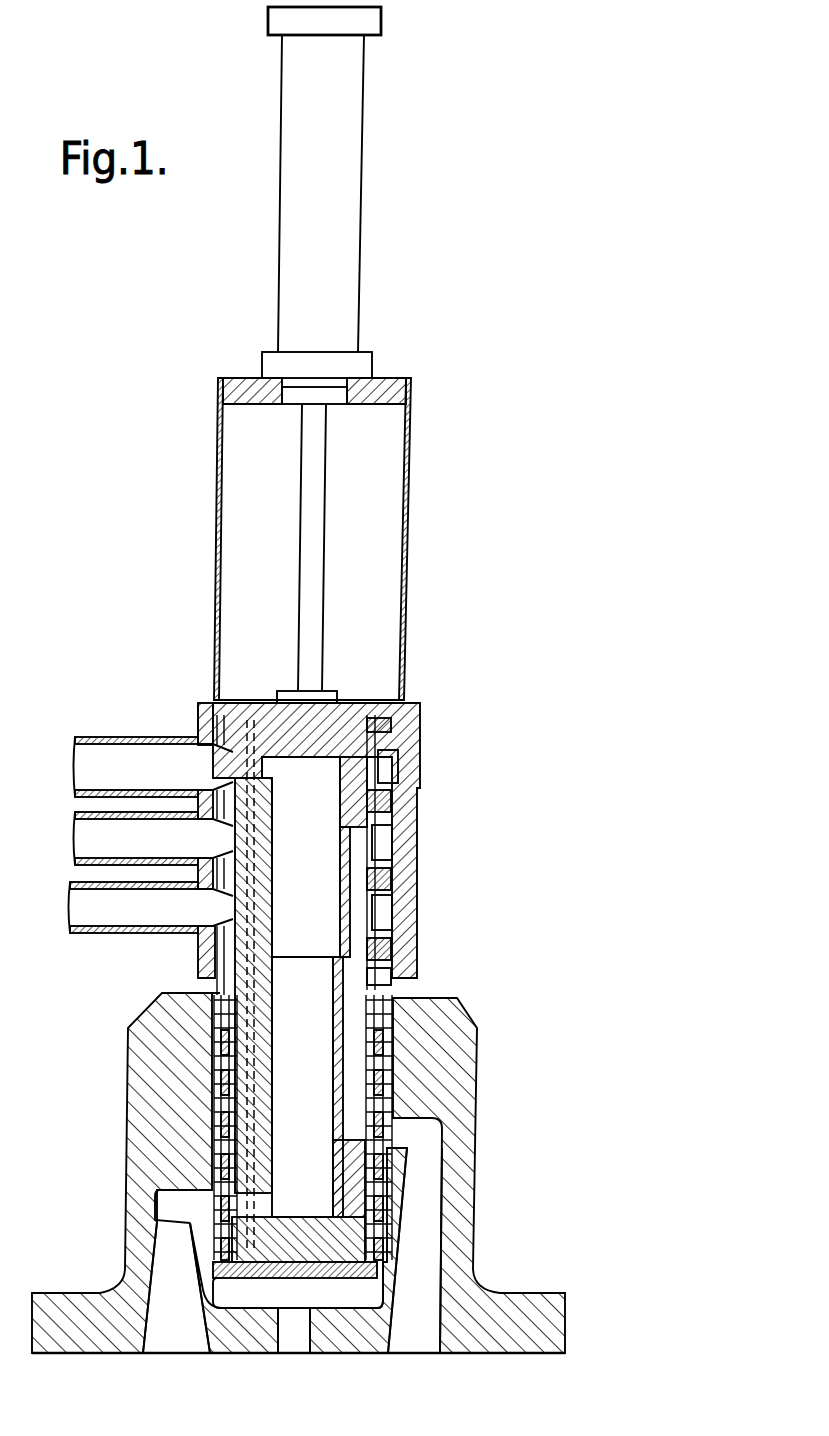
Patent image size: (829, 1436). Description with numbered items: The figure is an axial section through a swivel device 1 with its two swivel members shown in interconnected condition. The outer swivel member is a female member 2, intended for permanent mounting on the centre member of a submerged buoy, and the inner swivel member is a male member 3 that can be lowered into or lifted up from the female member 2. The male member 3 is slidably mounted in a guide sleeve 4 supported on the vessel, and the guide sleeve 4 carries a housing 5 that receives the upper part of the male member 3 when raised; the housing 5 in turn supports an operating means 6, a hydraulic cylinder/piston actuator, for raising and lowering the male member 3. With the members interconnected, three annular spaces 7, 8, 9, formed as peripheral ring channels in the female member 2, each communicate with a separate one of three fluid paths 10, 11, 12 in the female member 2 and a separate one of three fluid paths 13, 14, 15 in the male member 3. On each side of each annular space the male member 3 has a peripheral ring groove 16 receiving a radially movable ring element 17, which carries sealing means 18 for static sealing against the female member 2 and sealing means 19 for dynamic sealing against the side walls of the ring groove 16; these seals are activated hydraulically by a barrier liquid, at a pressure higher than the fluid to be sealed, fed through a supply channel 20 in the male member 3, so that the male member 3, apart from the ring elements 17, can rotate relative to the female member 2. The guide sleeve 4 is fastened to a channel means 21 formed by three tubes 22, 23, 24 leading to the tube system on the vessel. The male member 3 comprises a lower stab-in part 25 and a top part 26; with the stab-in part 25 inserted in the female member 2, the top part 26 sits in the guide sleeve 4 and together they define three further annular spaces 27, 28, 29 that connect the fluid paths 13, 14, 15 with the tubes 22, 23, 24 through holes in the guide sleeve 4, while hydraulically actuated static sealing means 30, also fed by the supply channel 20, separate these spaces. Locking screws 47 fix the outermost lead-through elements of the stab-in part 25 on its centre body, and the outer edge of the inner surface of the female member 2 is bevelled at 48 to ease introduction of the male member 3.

The valve 1 is at (438, 988).
The female member 2 is at (481, 1090).
The male member 3 is at (185, 982).
The guide sleeve 4 is at (405, 946).
The housing 5 is at (410, 558).
The operating means 6 is at (345, 202).
The annular space 7 is at (207, 1202).
The annular space 8 is at (215, 1135).
The annular space 9 is at (210, 1058).
The fluid path 10 is at (175, 1340).
The fluid path 11 is at (302, 1318).
The fluid path 12 is at (415, 1330).
The fluid path 13 is at (325, 995).
The fluid path 14 is at (352, 876).
The fluid path 15 is at (262, 1024).
The peripheral ring groove 16 is at (368, 1094).
The ring element 17 is at (340, 1118).
The sealing means 18 is at (215, 1098).
The sealing means 19 is at (245, 1115).
The supply channel 20 is at (295, 1264).
The channel means 21 is at (125, 736).
The tube 22 is at (168, 755).
The tube 23 is at (80, 834).
The tube 24 is at (80, 908).
The stab-in part 25 is at (350, 1196).
The top part 26 is at (372, 795).
The annular space 27 is at (392, 762).
The annular space 28 is at (390, 832).
The annular space 29 is at (378, 905).
The static sealing means 30 is at (382, 872).
The locking screw 47 is at (388, 1210).
The bevel 48 is at (395, 1005).